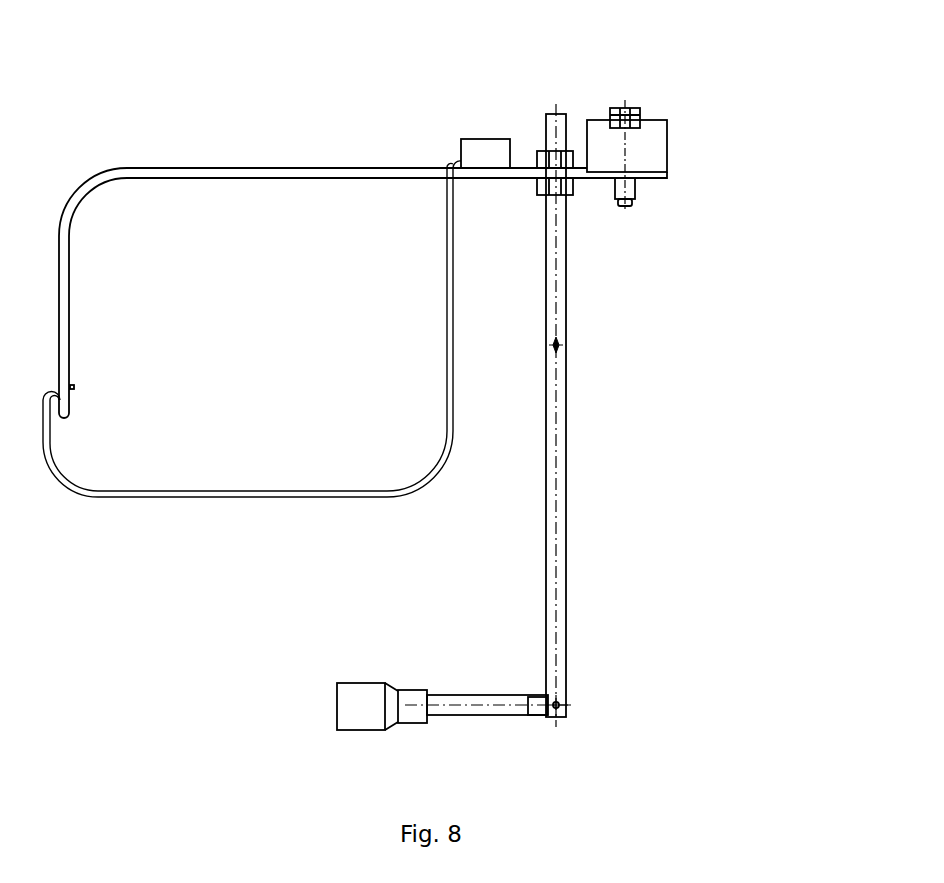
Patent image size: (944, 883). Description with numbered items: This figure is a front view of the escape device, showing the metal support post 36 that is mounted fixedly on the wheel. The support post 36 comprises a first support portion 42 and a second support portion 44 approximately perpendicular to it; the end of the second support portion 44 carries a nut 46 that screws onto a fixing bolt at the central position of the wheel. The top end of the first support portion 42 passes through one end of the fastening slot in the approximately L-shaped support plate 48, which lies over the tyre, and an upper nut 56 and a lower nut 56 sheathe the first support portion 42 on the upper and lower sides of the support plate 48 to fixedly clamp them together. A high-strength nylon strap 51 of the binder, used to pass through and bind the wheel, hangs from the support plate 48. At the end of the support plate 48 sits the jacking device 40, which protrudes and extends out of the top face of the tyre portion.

The support plate 48 is at (208, 178).
The jacking device 40 is at (651, 152).
The upper nut and lower nut 56 is at (572, 192).
The first support portion 42 is at (562, 415).
The support post 36 is at (566, 578).
The nylon strap 51 is at (163, 497).
The second support portion 44 is at (480, 713).
The nut 46 is at (355, 703).